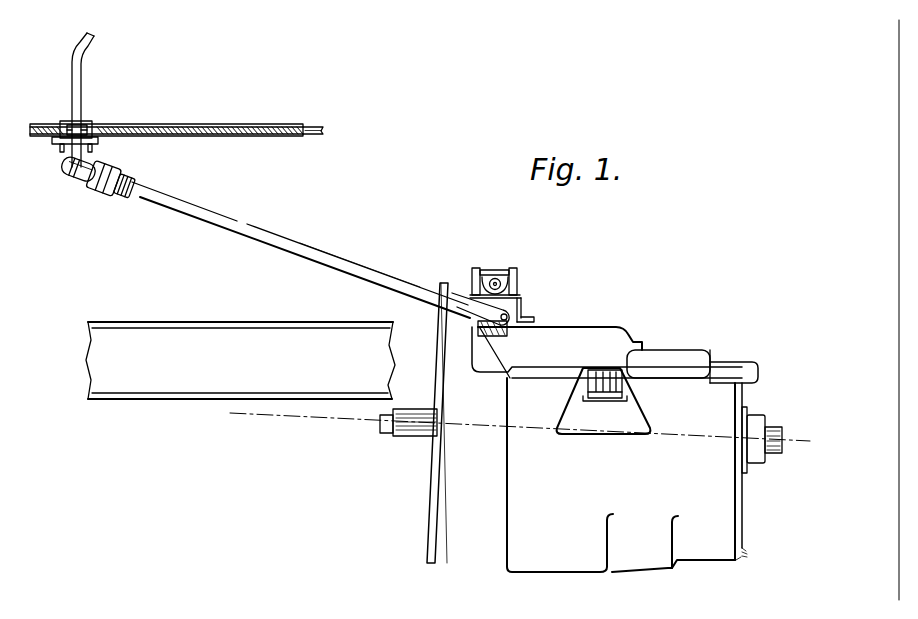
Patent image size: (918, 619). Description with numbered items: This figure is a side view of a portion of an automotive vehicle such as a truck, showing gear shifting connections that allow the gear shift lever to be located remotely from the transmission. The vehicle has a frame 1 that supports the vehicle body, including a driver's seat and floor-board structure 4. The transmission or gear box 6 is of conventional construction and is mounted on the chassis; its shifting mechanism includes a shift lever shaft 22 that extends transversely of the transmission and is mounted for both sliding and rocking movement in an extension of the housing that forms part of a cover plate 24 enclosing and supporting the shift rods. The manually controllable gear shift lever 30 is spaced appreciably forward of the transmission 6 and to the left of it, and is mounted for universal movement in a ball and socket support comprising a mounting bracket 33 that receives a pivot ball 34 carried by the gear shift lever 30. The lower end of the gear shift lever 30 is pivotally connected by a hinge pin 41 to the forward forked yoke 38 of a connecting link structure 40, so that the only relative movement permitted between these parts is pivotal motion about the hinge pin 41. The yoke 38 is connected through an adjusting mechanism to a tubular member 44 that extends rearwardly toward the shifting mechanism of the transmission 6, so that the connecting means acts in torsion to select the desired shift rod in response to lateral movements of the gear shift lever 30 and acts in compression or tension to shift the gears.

The frame 1 is at (178, 404).
The floor-board structure 4 is at (211, 127).
The transmission 6 is at (636, 332).
The shift lever shaft 22 is at (507, 279).
The cover plate 24 is at (578, 330).
The gear shift lever 30 is at (82, 72).
The mounting bracket 33 is at (85, 124).
The pivot ball 34 is at (67, 119).
The forward forked yoke 38 is at (93, 191).
The connecting link structure 40 is at (284, 237).
The hinge pin 41 is at (72, 186).
The tubular member 44 is at (341, 266).